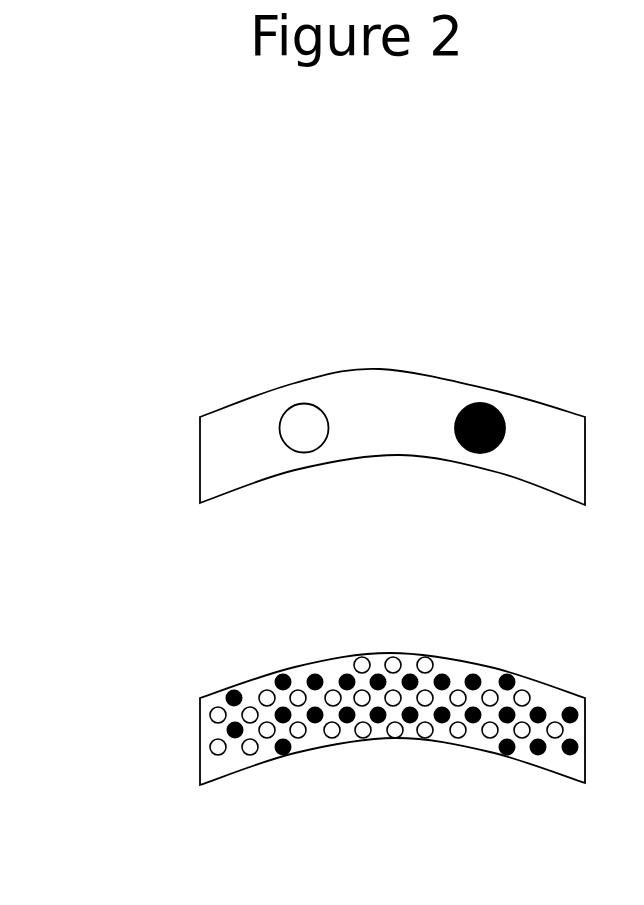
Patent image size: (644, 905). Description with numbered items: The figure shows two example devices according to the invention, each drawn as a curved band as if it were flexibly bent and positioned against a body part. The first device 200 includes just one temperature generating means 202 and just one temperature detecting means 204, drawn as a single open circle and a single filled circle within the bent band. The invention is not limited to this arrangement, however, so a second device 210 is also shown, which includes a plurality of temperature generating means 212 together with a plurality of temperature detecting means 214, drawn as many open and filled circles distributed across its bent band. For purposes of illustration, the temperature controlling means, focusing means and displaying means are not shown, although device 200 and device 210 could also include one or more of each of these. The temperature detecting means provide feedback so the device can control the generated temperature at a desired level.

The device 200 is at (170, 453).
The temperature generating means 202 is at (299, 404).
The temperature detecting means 204 is at (487, 406).
The device 210 is at (170, 738).
The temperature generating means 212 is at (330, 739).
The temperature detecting means 214 is at (500, 754).